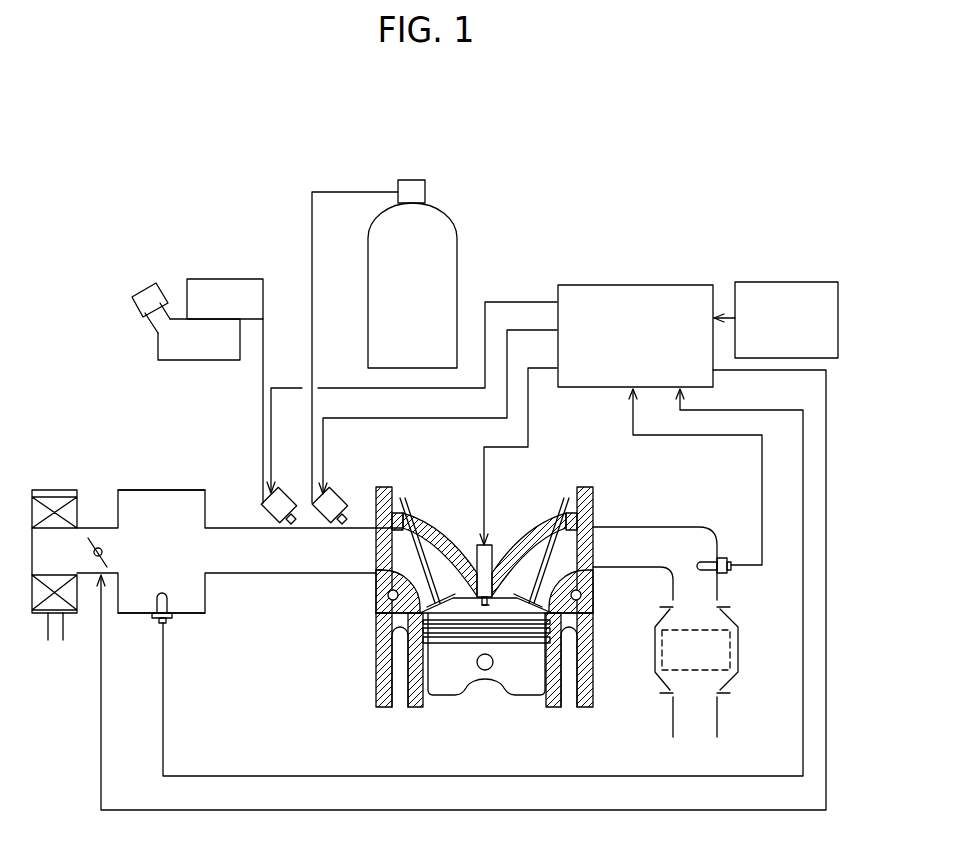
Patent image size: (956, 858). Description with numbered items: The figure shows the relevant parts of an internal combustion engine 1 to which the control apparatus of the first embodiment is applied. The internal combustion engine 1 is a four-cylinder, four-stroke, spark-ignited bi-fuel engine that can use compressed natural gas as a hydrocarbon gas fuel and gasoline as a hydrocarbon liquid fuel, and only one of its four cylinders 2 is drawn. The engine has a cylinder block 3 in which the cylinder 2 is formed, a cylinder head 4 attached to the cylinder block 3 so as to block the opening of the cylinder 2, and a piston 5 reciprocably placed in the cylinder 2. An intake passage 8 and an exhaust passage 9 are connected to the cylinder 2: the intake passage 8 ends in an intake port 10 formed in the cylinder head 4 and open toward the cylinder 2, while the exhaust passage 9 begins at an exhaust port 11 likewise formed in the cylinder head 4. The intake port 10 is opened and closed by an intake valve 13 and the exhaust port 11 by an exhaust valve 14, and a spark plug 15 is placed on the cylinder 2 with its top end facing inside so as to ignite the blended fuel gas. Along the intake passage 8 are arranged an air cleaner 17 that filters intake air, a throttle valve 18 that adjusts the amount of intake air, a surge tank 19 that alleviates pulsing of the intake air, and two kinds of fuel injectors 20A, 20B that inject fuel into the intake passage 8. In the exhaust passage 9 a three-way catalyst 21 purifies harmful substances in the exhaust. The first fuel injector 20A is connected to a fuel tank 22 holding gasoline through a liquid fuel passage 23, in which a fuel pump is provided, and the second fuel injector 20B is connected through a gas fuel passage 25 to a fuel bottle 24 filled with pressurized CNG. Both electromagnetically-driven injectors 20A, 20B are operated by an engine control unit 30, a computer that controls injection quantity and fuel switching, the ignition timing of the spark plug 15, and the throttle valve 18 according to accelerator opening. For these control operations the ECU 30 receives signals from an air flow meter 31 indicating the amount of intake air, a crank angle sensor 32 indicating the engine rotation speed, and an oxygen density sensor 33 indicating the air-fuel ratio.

The internal combustion engine 1 is at (549, 252).
The cylinder 2 is at (542, 703).
The cylinder block 3 is at (594, 640).
The cylinder head 4 is at (592, 492).
The piston 5 is at (440, 663).
The intake passage 8 is at (231, 527).
The exhaust passage 9 is at (675, 525).
The intake port 10 is at (393, 572).
The exhaust port 11 is at (582, 556).
The intake valve 13 is at (426, 517).
The exhaust valve 14 is at (539, 525).
The spark plug 15 is at (388, 593).
The air cleaner 17 is at (40, 512).
The throttle valve 18 is at (98, 538).
The surge tank 19 is at (135, 490).
The first fuel injector 20A is at (259, 508).
The second fuel injector 20B is at (341, 497).
The three-way catalyst 21 is at (718, 640).
The fuel tank 22 is at (158, 339).
The liquid fuel passage 23 is at (235, 278).
The fuel bottle 24 is at (458, 232).
The gas fuel passage 25 is at (345, 192).
The engine control unit (ECU) 30 is at (595, 283).
The air flow meter 31 is at (172, 620).
The crank angle sensor 32 is at (787, 282).
The oxygen density sensor 33 is at (723, 557).